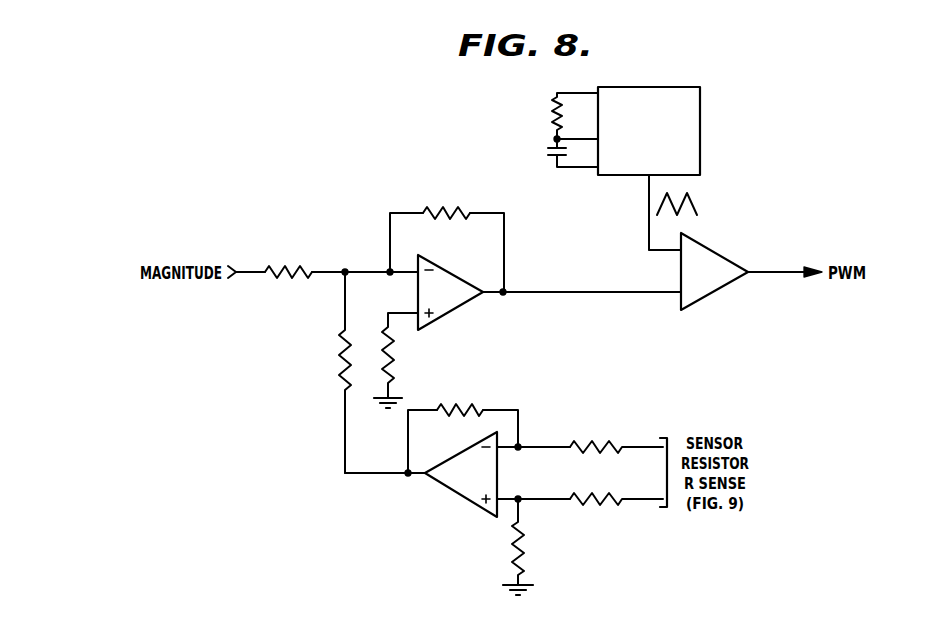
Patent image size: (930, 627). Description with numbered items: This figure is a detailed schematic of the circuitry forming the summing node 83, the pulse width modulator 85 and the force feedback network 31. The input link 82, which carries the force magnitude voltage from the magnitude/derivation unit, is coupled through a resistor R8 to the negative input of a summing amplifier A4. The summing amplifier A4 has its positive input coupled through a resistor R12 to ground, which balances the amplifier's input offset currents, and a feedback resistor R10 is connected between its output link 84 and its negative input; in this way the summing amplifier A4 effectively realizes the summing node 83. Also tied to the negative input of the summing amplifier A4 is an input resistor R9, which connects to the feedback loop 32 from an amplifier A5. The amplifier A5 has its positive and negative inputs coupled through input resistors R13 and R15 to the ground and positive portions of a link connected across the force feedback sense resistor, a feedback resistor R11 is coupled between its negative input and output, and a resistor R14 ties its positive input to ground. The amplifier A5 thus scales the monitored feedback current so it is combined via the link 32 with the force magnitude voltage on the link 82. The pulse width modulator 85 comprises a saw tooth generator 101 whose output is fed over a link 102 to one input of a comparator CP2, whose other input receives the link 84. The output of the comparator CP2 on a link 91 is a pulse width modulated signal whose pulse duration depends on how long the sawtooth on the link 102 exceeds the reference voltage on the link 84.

The input link 82 is at (243, 269).
The resistor R8 is at (288, 268).
The input resistor R9 is at (341, 356).
The feedback loop 32 is at (344, 407).
The summing amplifier A4 is at (450, 292).
The summing node 83 is at (480, 253).
The feedback resistor R10 is at (451, 210).
The resistor R12 is at (396, 348).
The output link 84 is at (577, 290).
The amplifier A5 is at (461, 474).
The force feedback network 31 is at (438, 440).
The feedback resistor R11 is at (481, 388).
The input resistor R15 is at (599, 440).
The input resistor R13 is at (591, 494).
The resistor R14 is at (525, 556).
The saw tooth generator 101 is at (701, 106).
The pulse width modulator 85 is at (625, 211).
The link 102 is at (648, 232).
The comparator CP2 is at (714, 271).
The link 91 is at (778, 252).